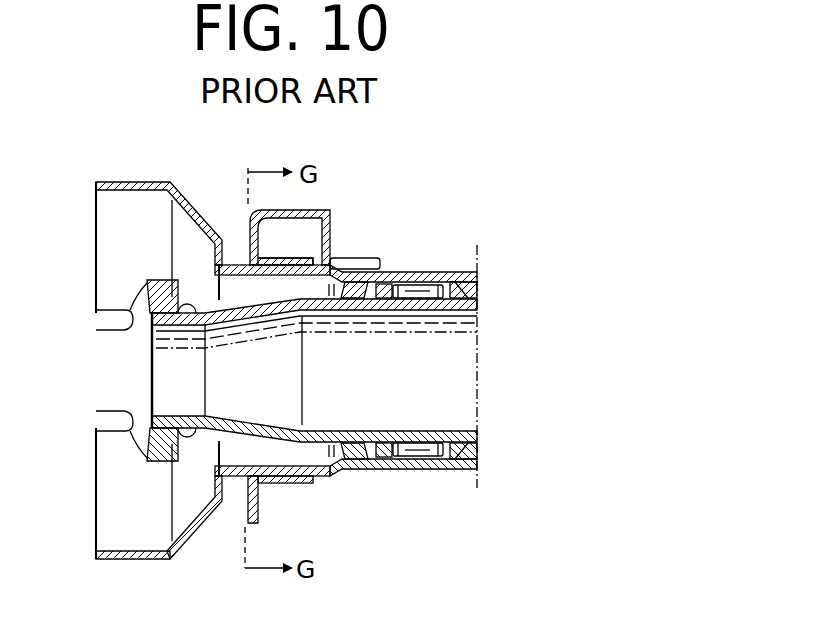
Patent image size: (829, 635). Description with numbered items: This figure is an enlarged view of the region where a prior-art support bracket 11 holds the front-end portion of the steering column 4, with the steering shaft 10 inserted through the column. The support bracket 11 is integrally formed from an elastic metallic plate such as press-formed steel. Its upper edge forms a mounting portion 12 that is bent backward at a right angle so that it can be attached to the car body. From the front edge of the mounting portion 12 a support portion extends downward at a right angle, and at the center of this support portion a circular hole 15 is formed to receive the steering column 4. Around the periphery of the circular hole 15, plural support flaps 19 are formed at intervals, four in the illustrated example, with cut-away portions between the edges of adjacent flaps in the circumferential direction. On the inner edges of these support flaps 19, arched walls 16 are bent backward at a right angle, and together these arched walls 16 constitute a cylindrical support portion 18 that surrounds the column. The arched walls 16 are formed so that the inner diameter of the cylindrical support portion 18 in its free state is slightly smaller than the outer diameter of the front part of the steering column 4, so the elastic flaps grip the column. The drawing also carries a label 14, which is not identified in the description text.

The steering column 4 is at (423, 472).
The steering shaft 10 is at (240, 300).
The support bracket 11 is at (315, 213).
The mounting portion 12 is at (363, 258).
The housing flange 14 is at (232, 505).
The circular hole 15 is at (223, 453).
The arched walls 16 is at (293, 262).
The cylindrical support portion 18 is at (405, 478).
The support flaps 19 is at (247, 245).